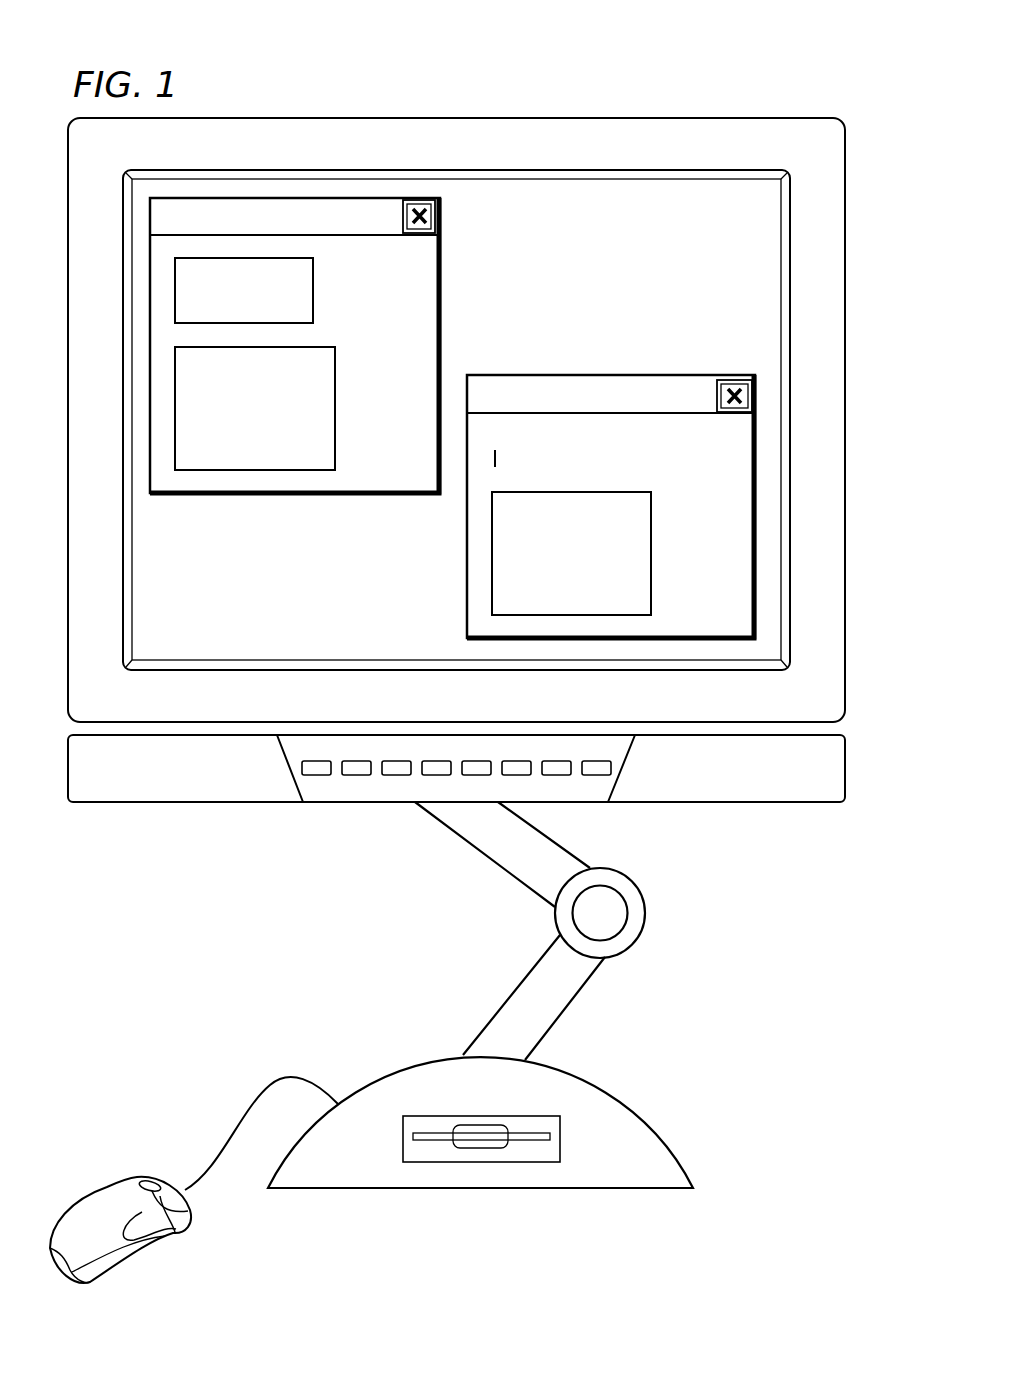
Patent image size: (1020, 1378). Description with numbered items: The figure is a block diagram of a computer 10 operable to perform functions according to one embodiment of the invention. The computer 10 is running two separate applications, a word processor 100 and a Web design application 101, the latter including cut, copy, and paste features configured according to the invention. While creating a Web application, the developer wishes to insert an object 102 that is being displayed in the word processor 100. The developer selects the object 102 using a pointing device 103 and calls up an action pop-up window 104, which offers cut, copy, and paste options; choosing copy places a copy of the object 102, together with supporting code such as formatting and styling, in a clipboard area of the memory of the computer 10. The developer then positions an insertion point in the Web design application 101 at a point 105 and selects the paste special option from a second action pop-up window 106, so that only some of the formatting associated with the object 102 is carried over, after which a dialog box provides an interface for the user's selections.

The computer 10 is at (647, 72).
The word processor 100 is at (443, 279).
The Web design application 101 is at (463, 552).
The object 102 is at (315, 291).
The pointing device 103 is at (102, 1188).
The action pop-up window 104 is at (337, 408).
The point 105 is at (503, 460).
The action pop-up window 106 is at (653, 555).